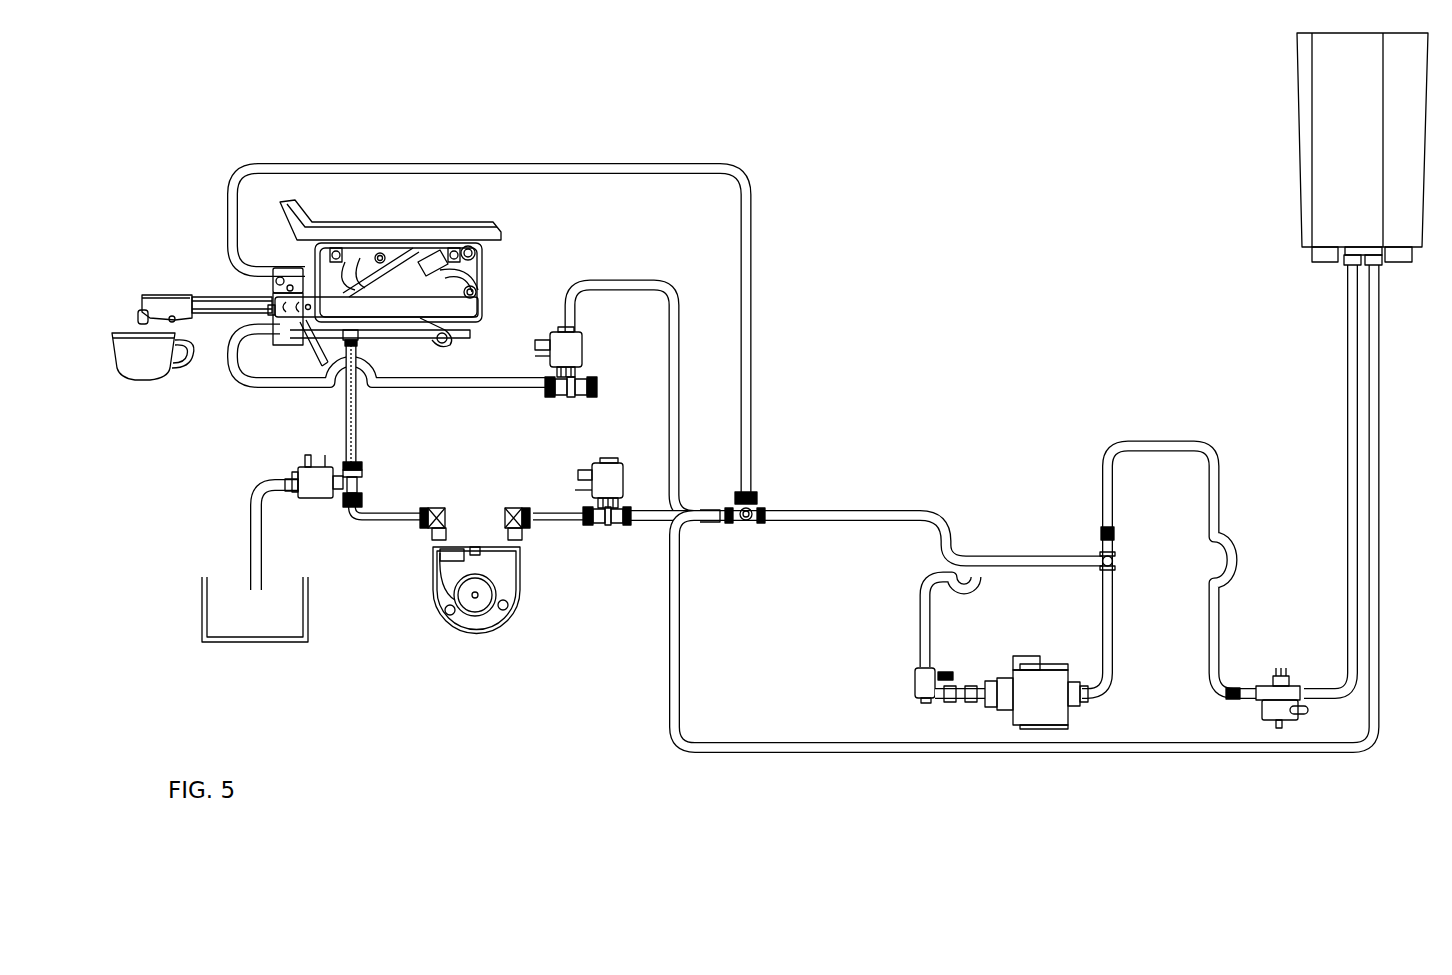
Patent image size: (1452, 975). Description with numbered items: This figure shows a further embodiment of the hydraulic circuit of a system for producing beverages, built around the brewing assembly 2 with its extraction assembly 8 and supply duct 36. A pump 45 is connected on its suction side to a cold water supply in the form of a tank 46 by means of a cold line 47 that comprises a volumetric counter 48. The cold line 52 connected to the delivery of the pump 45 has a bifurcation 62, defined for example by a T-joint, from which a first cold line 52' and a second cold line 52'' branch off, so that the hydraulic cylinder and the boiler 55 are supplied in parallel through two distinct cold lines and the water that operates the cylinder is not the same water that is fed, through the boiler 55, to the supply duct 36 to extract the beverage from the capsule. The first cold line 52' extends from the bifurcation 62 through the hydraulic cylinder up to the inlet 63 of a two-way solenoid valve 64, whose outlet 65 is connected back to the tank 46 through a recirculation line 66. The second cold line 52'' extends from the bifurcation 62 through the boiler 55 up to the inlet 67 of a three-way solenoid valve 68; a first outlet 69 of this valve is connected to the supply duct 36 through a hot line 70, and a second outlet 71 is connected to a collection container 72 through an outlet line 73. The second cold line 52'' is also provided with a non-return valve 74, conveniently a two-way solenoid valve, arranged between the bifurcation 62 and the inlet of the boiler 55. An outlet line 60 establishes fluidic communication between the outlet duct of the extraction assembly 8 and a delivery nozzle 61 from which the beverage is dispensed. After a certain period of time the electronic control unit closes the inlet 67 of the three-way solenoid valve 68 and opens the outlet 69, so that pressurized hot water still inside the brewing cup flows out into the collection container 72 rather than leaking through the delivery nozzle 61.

The brewing assembly 2 is at (405, 220).
The extraction assembly 8 is at (280, 270).
The supply duct 36 is at (366, 330).
The pump 45 is at (1055, 686).
The tank 46 is at (1328, 158).
The cold line 47 is at (1165, 436).
The volumetric counter 48 is at (1283, 712).
The cold line 52 is at (730, 562).
The first cold line 52' is at (724, 550).
The second cold line 52'' is at (527, 331).
The boiler 55 is at (515, 575).
The outlet line 60 is at (216, 303).
The delivery nozzle 61 is at (138, 315).
The bifurcation 62 is at (745, 526).
The inlet 63 is at (553, 395).
The two-way solenoid valve 64 is at (576, 352).
The outlet 65 is at (560, 325).
The recirculation line 66 is at (780, 748).
The inlet 67 is at (363, 505).
The three-way solenoid valve 68 is at (318, 488).
The first outlet 69 is at (363, 470).
The hot line 70 is at (358, 404).
The second outlet 71 is at (292, 478).
The collection container 72 is at (308, 598).
The outlet line 73 is at (255, 545).
The non-return valve 74 is at (618, 480).